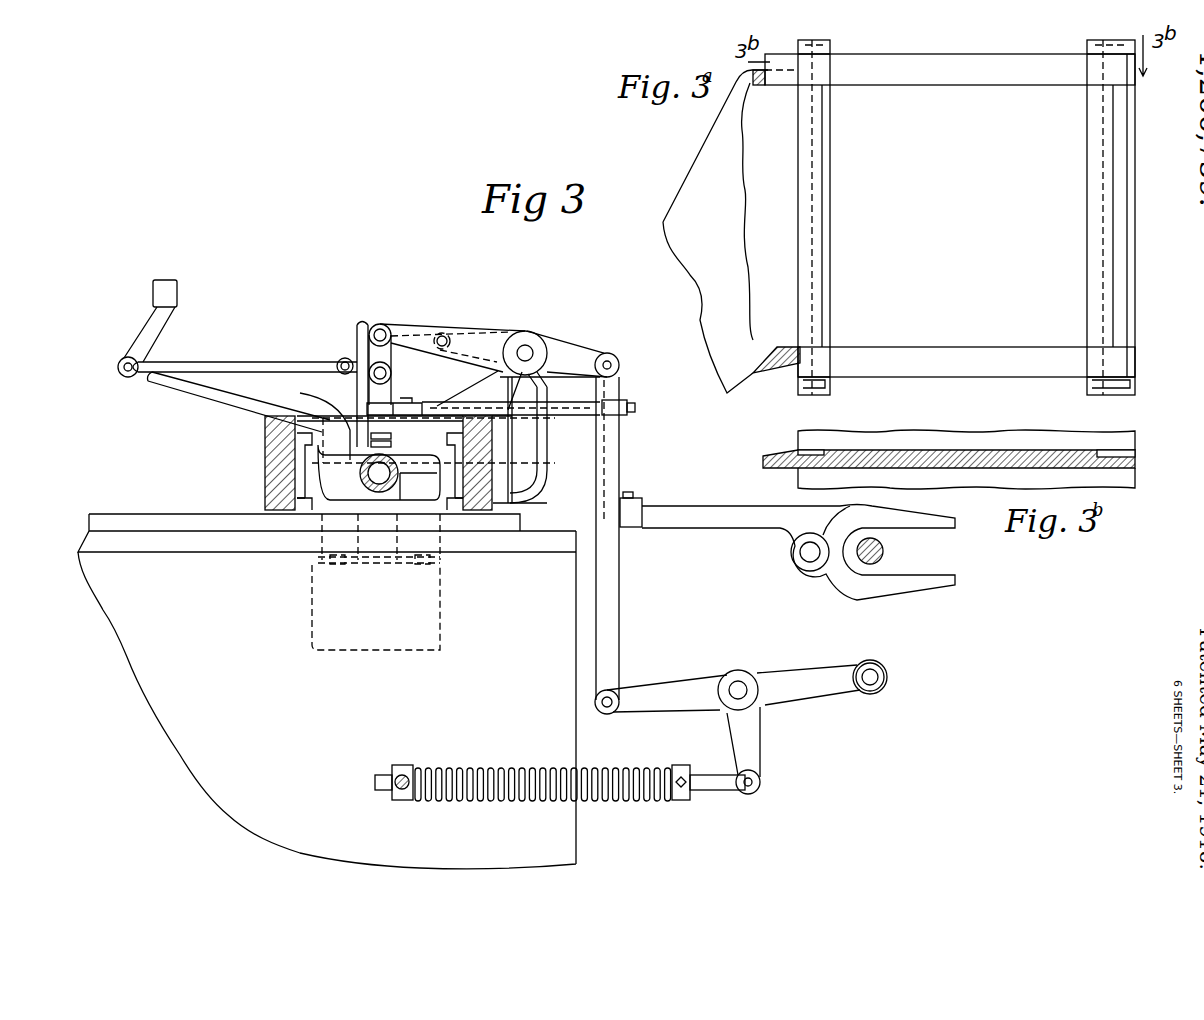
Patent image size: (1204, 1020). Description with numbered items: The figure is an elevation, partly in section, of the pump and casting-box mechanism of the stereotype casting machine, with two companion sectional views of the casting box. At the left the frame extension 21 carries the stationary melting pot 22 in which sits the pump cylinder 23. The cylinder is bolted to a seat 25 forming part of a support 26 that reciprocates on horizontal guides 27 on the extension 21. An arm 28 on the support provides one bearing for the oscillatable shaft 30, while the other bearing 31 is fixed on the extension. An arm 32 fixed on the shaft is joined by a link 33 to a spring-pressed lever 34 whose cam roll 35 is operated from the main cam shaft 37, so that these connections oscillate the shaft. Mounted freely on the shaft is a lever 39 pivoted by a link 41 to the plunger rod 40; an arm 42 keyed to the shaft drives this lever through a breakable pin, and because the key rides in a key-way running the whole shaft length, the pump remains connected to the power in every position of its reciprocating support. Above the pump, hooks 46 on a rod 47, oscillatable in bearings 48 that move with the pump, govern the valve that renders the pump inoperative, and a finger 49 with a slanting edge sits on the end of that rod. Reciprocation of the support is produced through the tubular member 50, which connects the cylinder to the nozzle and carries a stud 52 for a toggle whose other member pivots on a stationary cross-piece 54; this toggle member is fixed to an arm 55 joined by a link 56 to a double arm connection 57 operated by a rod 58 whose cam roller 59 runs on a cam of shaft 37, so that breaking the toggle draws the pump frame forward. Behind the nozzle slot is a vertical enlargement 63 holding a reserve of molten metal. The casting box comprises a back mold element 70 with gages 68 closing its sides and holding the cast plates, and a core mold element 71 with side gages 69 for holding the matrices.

In FIG. 3, the extension 21 is at (280, 455).
In FIG. 3, the melting pot 22 is at (568, 752).
In FIG. 3, the pump cylinder 23 is at (440, 630).
In FIG. 3, the seat 25 is at (440, 562).
In FIG. 3, the support 26 is at (322, 510).
In FIG. 3, the horizontal guides 27 is at (302, 508).
In FIG. 3, the arm 28 is at (465, 398).
In FIG. 3, the oscillatable shaft 30 is at (527, 350).
In FIG. 3, the bearing 31 is at (540, 465).
In FIG. 3, the arm 32 is at (575, 352).
In FIG. 3, the link 33 is at (612, 585).
In FIG. 3, the spring-pressed lever 34 is at (678, 688).
In FIG. 3, the cam roll 35 is at (888, 680).
In FIG. 3, the main cam shaft 37 is at (884, 552).
In FIG. 3, the lever 39 is at (428, 320).
In FIG. 3, the plunger rod 40 is at (384, 390).
In FIG. 3, the link 41 is at (392, 330).
In FIG. 3, the arm 42 is at (444, 336).
In FIG. 3, the hooks 46 is at (358, 330).
In FIG. 3, the rod 47 is at (233, 362).
In FIG. 3, the bearings 48 is at (340, 362).
In FIG. 3, the finger 49 is at (168, 286).
In FIG. 3, the tubular member 50 is at (392, 480).
In FIG. 3A, the tubular member 50 is at (682, 195).
In FIG. 3, the stud 52 is at (392, 442).
In FIG. 3, the stationary cross-piece 54 is at (335, 420).
In FIG. 3, the arm 55 is at (415, 404).
In FIG. 3, the link 56 is at (555, 412).
In FIG. 3, the lever or double arm connection 57 is at (630, 404).
In FIG. 3, the rod 58 is at (745, 503).
In FIG. 3, the cam roller 59 is at (806, 556).
In FIG. 3A, the vertical enlargement 63 is at (757, 170).
In FIG. 3A, the gages 68 is at (958, 83).
In FIG. 3B, the gages 68 is at (893, 458).
In FIG. 3A, the side gages 69 is at (830, 48).
In FIG. 3B, the side gages 69 is at (808, 452).
In FIG. 3B, the mold element 70 is at (1010, 485).
In FIG. 3A, the mold element 71 is at (958, 216).
In FIG. 3B, the mold element 71 is at (968, 440).